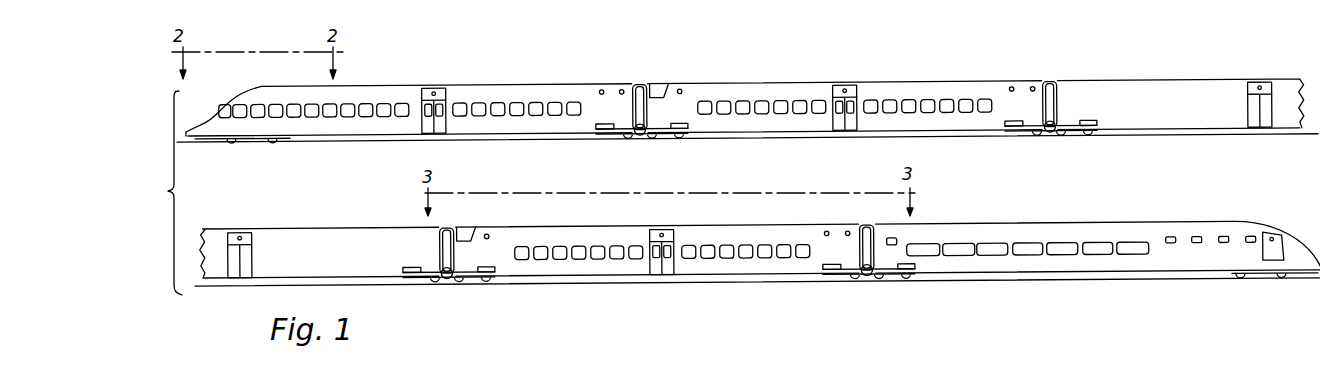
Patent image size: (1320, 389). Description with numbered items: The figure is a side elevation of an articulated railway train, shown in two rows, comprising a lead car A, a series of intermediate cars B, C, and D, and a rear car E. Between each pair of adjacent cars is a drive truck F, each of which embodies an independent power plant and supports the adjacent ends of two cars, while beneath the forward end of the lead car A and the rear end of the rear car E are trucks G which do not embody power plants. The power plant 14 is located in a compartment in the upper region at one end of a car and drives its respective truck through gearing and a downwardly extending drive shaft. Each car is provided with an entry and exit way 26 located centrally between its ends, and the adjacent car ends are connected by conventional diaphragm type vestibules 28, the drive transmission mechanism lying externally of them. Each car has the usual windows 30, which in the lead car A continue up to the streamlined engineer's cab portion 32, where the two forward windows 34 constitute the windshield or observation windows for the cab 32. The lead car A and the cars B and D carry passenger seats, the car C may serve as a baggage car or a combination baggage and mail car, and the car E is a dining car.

The power plant 14 is at (470, 240).
The entry and exit way 26 is at (431, 134).
The diaphragm type vestibule 28 is at (641, 84).
The window 30 is at (804, 106).
The engineer's cab portion 32 is at (258, 88).
The forward window 34 is at (218, 104).
The lead car A is at (547, 83).
The intermediate car B is at (775, 83).
The intermediate car C is at (1170, 80).
The intermediate car D is at (572, 228).
The rear car E is at (1097, 223).
The drive truck F is at (638, 140).
The truck G is at (238, 139).